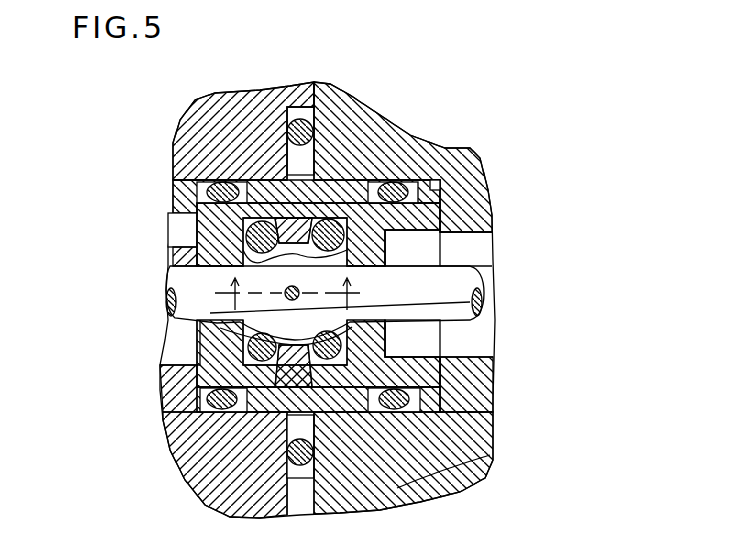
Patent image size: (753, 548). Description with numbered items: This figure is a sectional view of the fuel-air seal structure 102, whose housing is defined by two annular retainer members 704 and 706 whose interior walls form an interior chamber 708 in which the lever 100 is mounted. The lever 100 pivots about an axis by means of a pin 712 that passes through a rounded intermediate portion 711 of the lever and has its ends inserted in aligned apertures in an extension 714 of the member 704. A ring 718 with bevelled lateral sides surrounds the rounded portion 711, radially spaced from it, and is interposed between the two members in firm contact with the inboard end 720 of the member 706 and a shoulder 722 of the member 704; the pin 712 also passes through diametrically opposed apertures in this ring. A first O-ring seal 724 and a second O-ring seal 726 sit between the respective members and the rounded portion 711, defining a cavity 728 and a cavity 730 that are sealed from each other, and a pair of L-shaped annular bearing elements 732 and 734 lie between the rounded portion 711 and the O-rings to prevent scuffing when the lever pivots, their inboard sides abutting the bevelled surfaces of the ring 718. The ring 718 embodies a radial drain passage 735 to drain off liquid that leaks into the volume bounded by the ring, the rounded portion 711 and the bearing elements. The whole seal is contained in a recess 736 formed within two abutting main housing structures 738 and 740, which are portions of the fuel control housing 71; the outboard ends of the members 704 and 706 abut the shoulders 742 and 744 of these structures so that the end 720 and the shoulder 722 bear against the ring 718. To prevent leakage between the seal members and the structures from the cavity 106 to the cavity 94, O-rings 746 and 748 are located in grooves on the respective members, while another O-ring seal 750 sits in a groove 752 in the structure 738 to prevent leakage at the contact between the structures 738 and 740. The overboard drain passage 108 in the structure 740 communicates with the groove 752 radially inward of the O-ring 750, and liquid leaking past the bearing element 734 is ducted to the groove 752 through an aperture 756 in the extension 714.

The fuel control housing 71 is at (122, 106).
The cavity 94 is at (170, 338).
The lever 100 is at (470, 272).
The seal structure 102 is at (104, 302).
The cavity 106 is at (478, 243).
The overboard drain passage 108 is at (488, 462).
The annular retainer member 704 is at (197, 237).
The annular retainer member 706 is at (430, 200).
The interior chamber 708 is at (220, 352).
The rounded intermediate portion 711 is at (300, 300).
The pin 712 is at (299, 290).
The extension 714 is at (302, 160).
The ring 718 is at (255, 222).
The inboard end 720 is at (330, 177).
The shoulder 722 is at (290, 212).
The first O-ring seal 724 is at (200, 362).
The second O-ring seal 726 is at (352, 332).
The cavity 728 is at (215, 338).
The cavity 730 is at (445, 330).
The annular bearing element 732 is at (225, 252).
The annular bearing element 734 is at (330, 263).
The radial drain passage 735 is at (205, 398).
The recess 736 is at (272, 405).
The main housing structure 738 is at (245, 90).
The main housing structure 740 is at (410, 133).
The shoulder 742 is at (215, 188).
The shoulder 744 is at (472, 148).
The O-ring 746 is at (215, 435).
The O-ring 748 is at (420, 392).
The O-ring seal 750 is at (322, 178).
The groove 752 is at (245, 102).
The aperture 756 is at (290, 440).